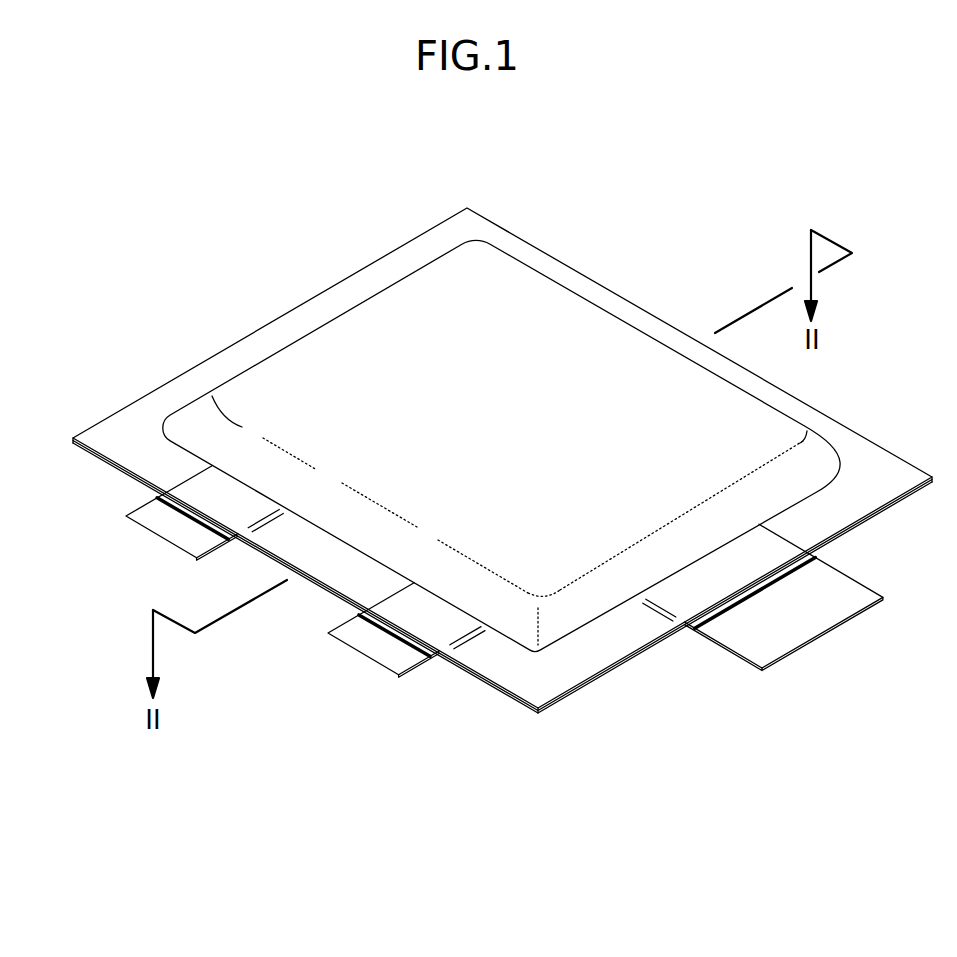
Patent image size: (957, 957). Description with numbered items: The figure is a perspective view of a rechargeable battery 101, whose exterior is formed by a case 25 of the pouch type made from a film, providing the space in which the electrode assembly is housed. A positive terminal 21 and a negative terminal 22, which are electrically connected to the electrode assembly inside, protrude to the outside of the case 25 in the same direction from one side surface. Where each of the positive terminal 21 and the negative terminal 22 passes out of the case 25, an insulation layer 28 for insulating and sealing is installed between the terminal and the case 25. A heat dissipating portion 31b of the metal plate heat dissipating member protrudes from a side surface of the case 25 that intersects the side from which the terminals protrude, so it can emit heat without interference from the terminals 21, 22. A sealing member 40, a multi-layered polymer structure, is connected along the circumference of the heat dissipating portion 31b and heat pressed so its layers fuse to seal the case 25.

The rechargeable battery 101 is at (565, 180).
The case 25 is at (425, 245).
The positive terminal 21 is at (370, 650).
The negative terminal 22 is at (147, 518).
The insulation layer 28 is at (152, 500).
The heat dissipating portion 31b is at (878, 597).
The sealing member 40 is at (718, 614).